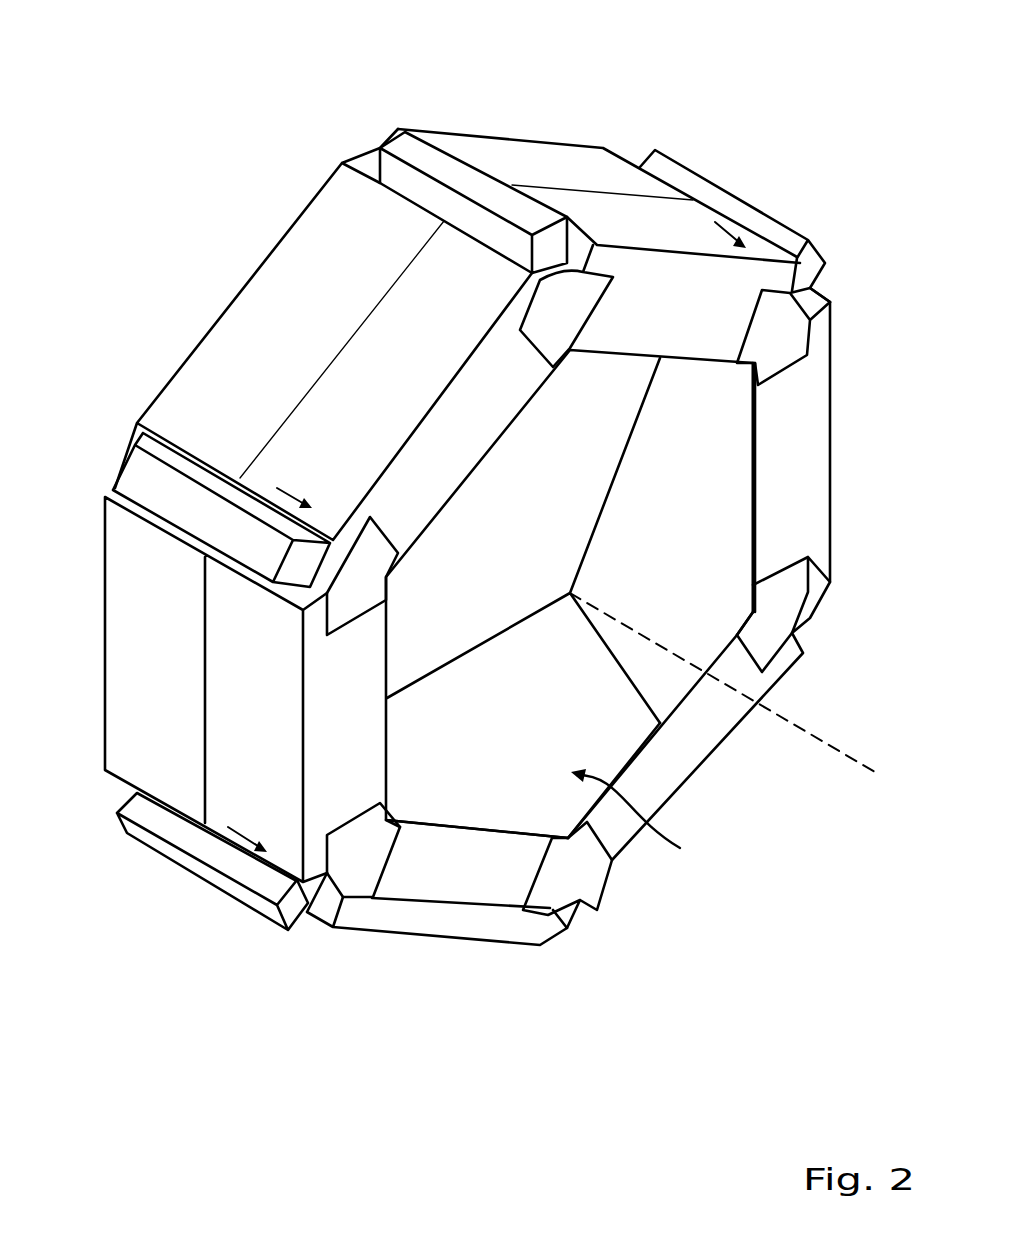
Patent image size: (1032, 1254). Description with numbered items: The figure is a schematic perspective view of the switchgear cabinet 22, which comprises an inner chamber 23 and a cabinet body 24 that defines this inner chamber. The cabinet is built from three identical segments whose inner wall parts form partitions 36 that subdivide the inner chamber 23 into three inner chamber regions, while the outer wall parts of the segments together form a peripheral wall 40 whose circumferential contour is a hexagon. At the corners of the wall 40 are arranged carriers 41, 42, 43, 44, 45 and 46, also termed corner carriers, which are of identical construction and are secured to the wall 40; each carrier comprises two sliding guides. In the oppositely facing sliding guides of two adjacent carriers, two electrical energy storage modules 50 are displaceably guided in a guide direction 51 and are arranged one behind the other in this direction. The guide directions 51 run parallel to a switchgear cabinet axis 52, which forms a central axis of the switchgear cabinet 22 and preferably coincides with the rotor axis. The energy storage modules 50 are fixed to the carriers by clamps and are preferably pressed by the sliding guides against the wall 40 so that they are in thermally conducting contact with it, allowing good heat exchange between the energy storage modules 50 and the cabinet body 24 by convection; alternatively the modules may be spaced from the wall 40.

The switchgear cabinet 22 is at (188, 72).
The inner chamber 23 is at (641, 815).
The cabinet body 24 is at (447, 840).
The partitions 36 is at (617, 482).
The peripheral wall 40 is at (750, 543).
The carrier 41 is at (780, 620).
The carrier 42 is at (790, 323).
The carrier 43 is at (558, 337).
The carrier 44 is at (378, 560).
The carrier 45 is at (342, 882).
The carrier 46 is at (568, 885).
The electrical energy storage module 50 is at (545, 146).
The guide direction 51 is at (725, 215).
The switchgear cabinet axis 52 is at (830, 760).